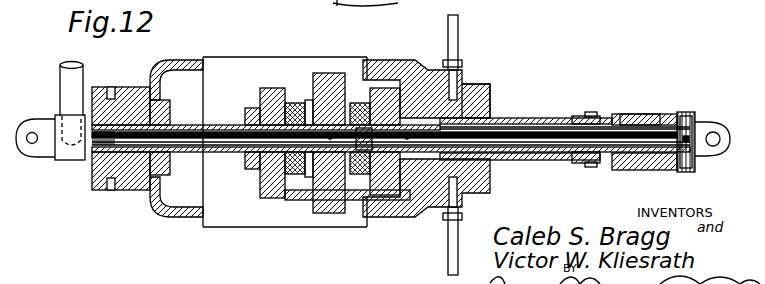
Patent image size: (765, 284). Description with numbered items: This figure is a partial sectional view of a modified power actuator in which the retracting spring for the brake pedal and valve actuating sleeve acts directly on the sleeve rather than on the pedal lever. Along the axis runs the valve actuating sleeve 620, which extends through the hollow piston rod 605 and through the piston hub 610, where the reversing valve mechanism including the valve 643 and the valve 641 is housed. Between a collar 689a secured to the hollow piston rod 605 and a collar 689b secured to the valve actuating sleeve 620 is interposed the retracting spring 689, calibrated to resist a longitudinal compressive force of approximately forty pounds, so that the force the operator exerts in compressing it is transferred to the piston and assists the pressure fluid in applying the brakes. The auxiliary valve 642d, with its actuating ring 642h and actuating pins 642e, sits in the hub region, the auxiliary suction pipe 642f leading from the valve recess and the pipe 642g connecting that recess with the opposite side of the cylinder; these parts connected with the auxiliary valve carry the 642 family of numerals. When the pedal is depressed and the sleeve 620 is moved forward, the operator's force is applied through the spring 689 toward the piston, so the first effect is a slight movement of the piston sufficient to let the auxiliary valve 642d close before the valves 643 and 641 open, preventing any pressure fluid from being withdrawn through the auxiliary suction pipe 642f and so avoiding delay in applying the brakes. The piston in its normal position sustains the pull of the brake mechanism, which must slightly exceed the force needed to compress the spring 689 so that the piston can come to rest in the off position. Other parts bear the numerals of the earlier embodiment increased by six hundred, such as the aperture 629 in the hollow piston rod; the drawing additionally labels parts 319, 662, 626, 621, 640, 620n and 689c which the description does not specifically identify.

The lever (figure above) 319 is at (365, 11).
The conduit pipe 662 is at (78, 79).
The clevis end block 626 is at (66, 160).
The end flange 621 is at (101, 191).
The housing 640 is at (258, 172).
The piston hub 610 is at (268, 90).
The valve 641 is at (335, 172).
The valve 643 is at (412, 80).
The hub 642 is at (348, 165).
The auxiliary valve 642d is at (470, 96).
The actuating pins 642e is at (414, 214).
The auxiliary suction pipe 642f is at (456, 38).
The pipe 642g is at (450, 233).
The actuating ring 642h is at (452, 80).
The hollow piston rod 605 is at (535, 114).
The valve actuating sleeve 620 is at (535, 157).
The tube sleeve 620n is at (585, 161).
The collar 689c is at (578, 116).
The retracting spring 689 is at (662, 118).
The collar 689a is at (638, 108).
The collar 689b is at (670, 166).
The aperture 629 is at (690, 170).